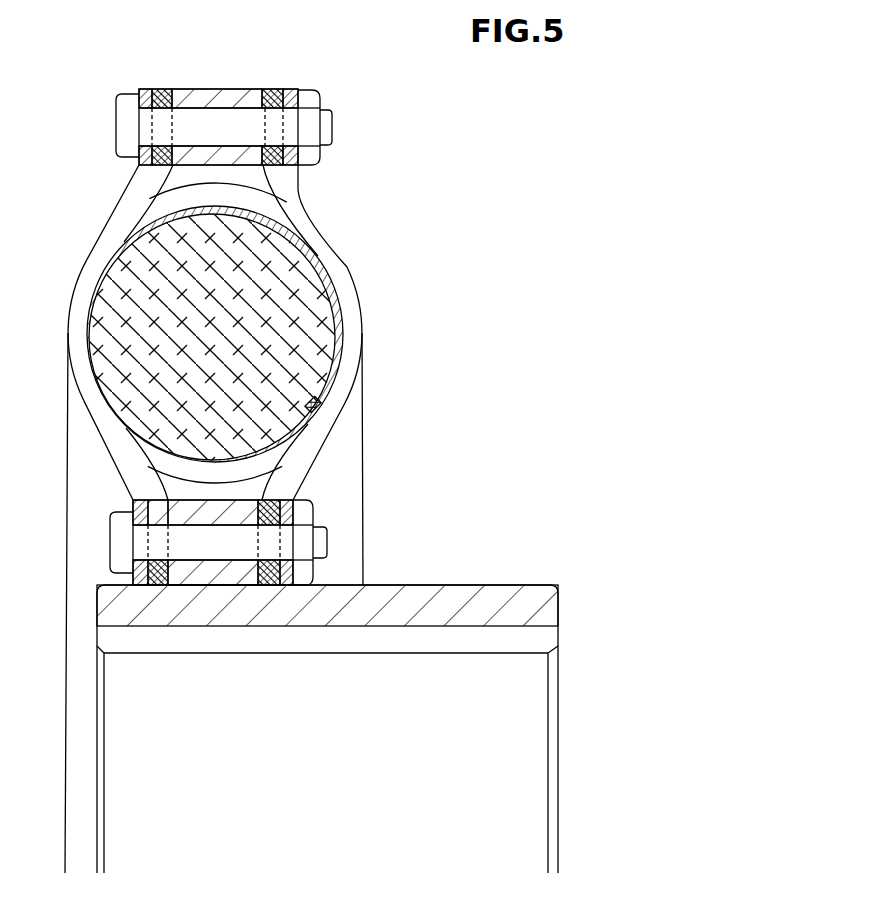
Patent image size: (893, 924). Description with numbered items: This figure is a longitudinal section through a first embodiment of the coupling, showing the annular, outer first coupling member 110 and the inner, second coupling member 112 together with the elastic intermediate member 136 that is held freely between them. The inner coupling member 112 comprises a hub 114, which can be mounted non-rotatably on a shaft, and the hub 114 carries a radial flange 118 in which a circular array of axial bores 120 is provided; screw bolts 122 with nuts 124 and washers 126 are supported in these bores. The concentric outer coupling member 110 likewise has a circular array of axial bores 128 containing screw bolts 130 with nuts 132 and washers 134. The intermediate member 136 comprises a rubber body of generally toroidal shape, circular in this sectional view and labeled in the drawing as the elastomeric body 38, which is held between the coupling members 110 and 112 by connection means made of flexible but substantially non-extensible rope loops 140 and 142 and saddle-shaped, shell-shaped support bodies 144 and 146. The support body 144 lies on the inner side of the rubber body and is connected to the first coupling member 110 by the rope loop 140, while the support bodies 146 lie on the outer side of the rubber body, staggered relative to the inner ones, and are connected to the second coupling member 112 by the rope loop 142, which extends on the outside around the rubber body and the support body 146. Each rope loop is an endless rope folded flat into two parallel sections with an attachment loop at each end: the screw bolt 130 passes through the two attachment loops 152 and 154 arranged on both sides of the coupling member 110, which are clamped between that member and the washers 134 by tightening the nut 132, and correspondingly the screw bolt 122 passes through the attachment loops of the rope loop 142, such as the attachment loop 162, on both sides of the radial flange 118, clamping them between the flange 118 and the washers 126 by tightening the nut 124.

The hose 38 is at (212, 337).
The outer first coupling member 110 is at (216, 90).
The inner second coupling member 112 is at (327, 706).
The hub 114 is at (452, 605).
The radial flange 118 is at (209, 577).
The axial bores 120 is at (232, 562).
The screw bolts 122 is at (125, 548).
The nuts 124 is at (300, 518).
The washers 126 is at (133, 502).
The axial bores 128 is at (193, 90).
The screw bolts 130 is at (124, 100).
The nuts 132 is at (311, 100).
The washers 134 is at (152, 92).
The intermediate member 136 is at (348, 296).
The rope loops 140 is at (297, 199).
The rope loops 142 is at (120, 443).
The shell-shaped support body 144 is at (316, 408).
The shell-shaped support bodies 146 is at (304, 244).
The attachment loop 152 is at (164, 90).
The attachment loop 154 is at (270, 90).
The attachment loop 162 is at (267, 572).